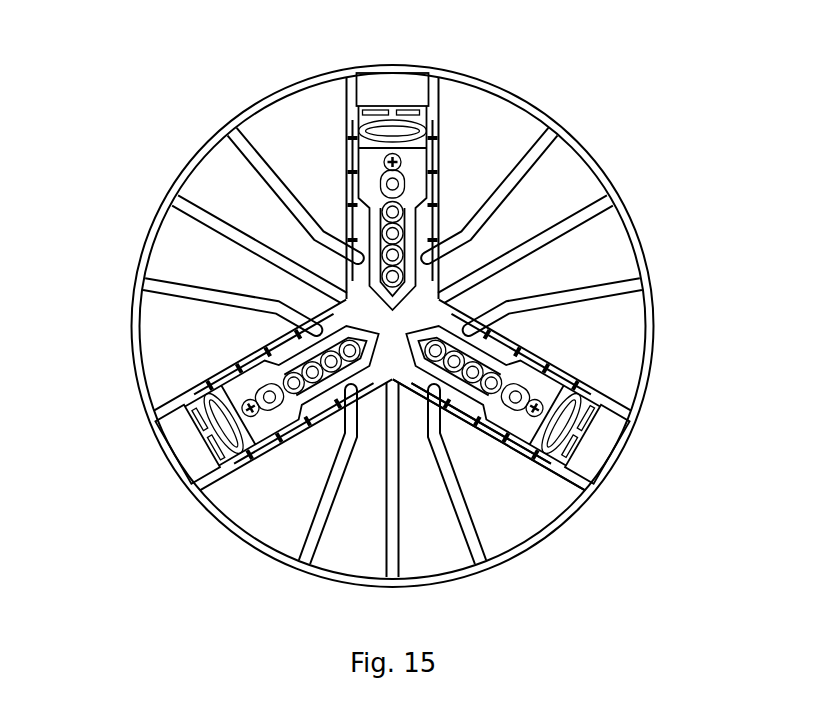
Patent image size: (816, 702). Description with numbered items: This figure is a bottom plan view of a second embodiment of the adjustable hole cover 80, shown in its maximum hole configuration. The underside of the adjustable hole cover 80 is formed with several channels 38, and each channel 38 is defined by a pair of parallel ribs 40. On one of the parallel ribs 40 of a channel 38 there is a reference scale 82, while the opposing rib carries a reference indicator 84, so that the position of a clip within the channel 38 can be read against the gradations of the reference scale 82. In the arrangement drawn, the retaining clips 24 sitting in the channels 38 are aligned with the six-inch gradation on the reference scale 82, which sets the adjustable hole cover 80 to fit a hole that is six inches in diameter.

The adjustable hole cover 80 is at (112, 162).
The parallel ribs 40 is at (427, 97).
The retaining clips 24 is at (272, 445).
The channel 38 is at (185, 450).
The reference indicator 84 is at (577, 388).
The reference scale 82 is at (500, 442).